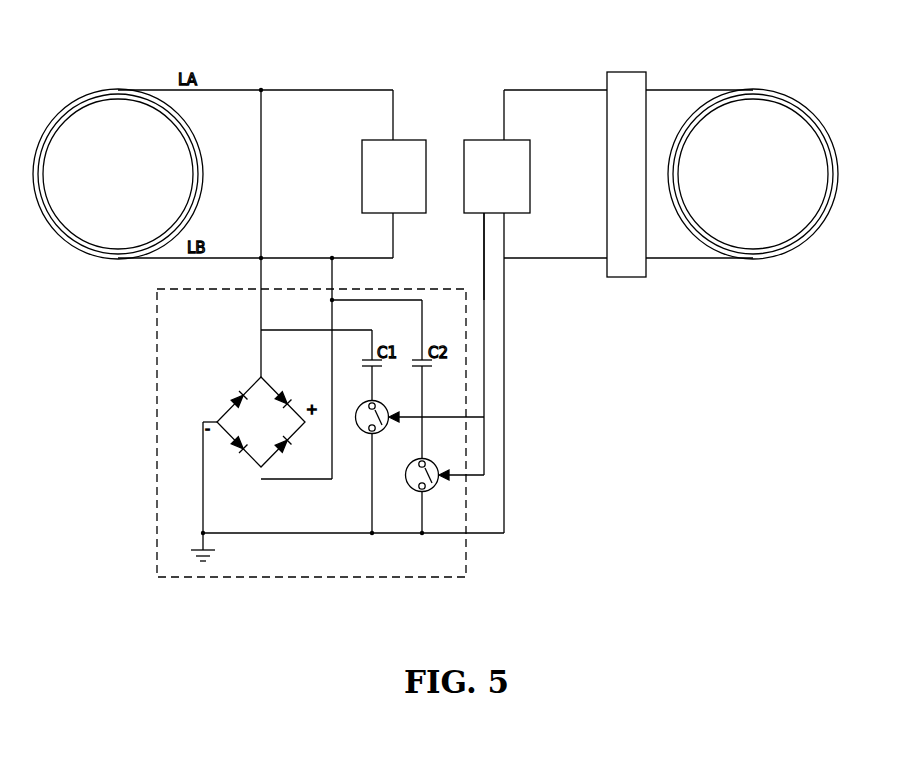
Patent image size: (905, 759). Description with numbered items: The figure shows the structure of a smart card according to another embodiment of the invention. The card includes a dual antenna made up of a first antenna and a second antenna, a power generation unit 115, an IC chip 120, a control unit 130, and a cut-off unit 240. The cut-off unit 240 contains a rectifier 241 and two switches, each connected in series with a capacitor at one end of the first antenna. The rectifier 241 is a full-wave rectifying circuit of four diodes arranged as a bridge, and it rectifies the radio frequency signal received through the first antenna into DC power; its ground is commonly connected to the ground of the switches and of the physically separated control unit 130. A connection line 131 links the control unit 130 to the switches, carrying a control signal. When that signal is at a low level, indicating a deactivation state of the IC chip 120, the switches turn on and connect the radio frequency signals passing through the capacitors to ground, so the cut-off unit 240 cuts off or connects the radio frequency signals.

The power generation unit 115 is at (646, 72).
The IC chip 120 is at (362, 172).
The control unit 130 is at (530, 155).
The connection line 131 is at (484, 275).
The cut-off unit 240 is at (157, 410).
The rectifier 241 is at (229, 404).